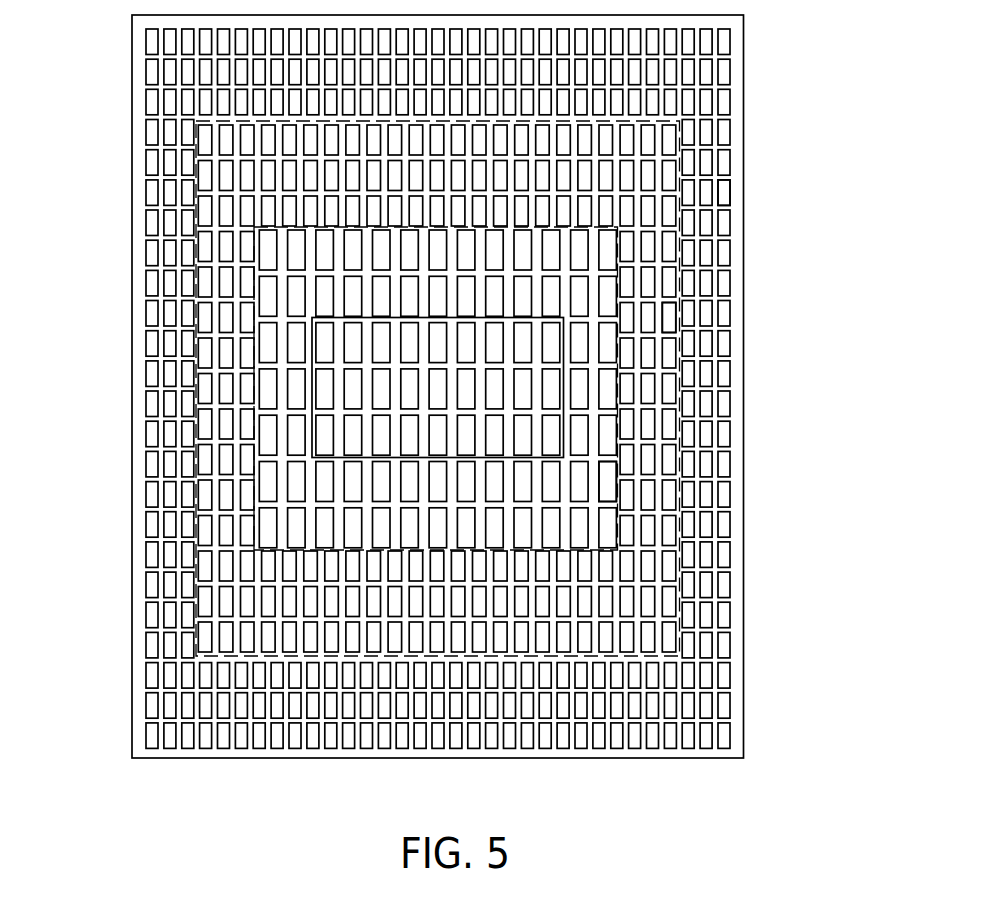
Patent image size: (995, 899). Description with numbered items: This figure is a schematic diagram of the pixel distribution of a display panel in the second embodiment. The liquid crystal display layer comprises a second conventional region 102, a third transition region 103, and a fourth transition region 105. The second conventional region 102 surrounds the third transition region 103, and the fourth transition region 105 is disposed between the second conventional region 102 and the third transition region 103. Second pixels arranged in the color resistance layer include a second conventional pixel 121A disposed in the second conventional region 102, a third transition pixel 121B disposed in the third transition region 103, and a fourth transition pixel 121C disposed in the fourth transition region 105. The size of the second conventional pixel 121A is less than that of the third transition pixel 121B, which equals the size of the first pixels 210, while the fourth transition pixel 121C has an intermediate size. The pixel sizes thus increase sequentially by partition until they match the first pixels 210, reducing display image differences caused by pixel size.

The second conventional region 102 is at (733, 153).
The second conventional pixel 121A is at (725, 198).
The fourth transition region 105 is at (676, 265).
The fourth transition pixel 121C is at (670, 323).
The third transition region 103 is at (610, 411).
The third transition pixel 121B is at (605, 478).
The first pixels 210 is at (328, 434).